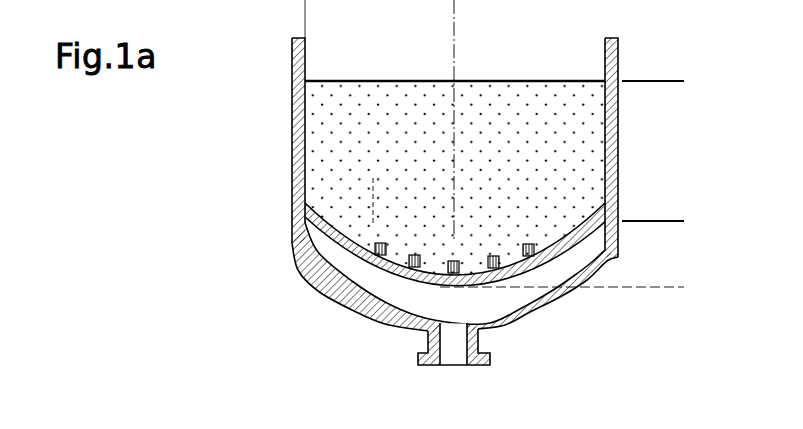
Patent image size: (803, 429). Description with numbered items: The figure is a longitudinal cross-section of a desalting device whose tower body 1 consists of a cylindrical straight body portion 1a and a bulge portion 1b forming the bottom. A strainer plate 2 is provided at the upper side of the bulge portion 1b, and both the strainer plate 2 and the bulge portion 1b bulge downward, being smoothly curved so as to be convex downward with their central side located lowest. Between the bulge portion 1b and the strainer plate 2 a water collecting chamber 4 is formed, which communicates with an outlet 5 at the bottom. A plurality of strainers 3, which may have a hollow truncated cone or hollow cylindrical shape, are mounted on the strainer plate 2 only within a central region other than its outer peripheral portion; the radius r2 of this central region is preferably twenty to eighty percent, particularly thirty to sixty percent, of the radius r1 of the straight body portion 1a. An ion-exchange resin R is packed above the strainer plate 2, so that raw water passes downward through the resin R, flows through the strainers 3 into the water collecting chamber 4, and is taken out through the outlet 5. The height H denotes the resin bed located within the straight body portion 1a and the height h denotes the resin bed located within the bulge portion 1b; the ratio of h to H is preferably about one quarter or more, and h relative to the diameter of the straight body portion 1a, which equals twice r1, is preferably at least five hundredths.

The tower body 1 is at (289, 93).
The straight body portion 1a is at (291, 129).
The bulge portion 1b is at (556, 302).
The strainer plate 2 is at (392, 282).
The strainers 3 is at (414, 255).
The water collecting chamber 4 is at (363, 285).
The outlet 5 is at (454, 356).
The ion-exchange resin R is at (530, 98).
The height of ion-exchange resin bed within the straight body portion H is at (662, 81).
The height of ion-exchange resin bed within the bulge portion h is at (662, 221).
The radius of the straight body portion r1 is at (454, 8).
The radius of the central region r2 is at (454, 189).